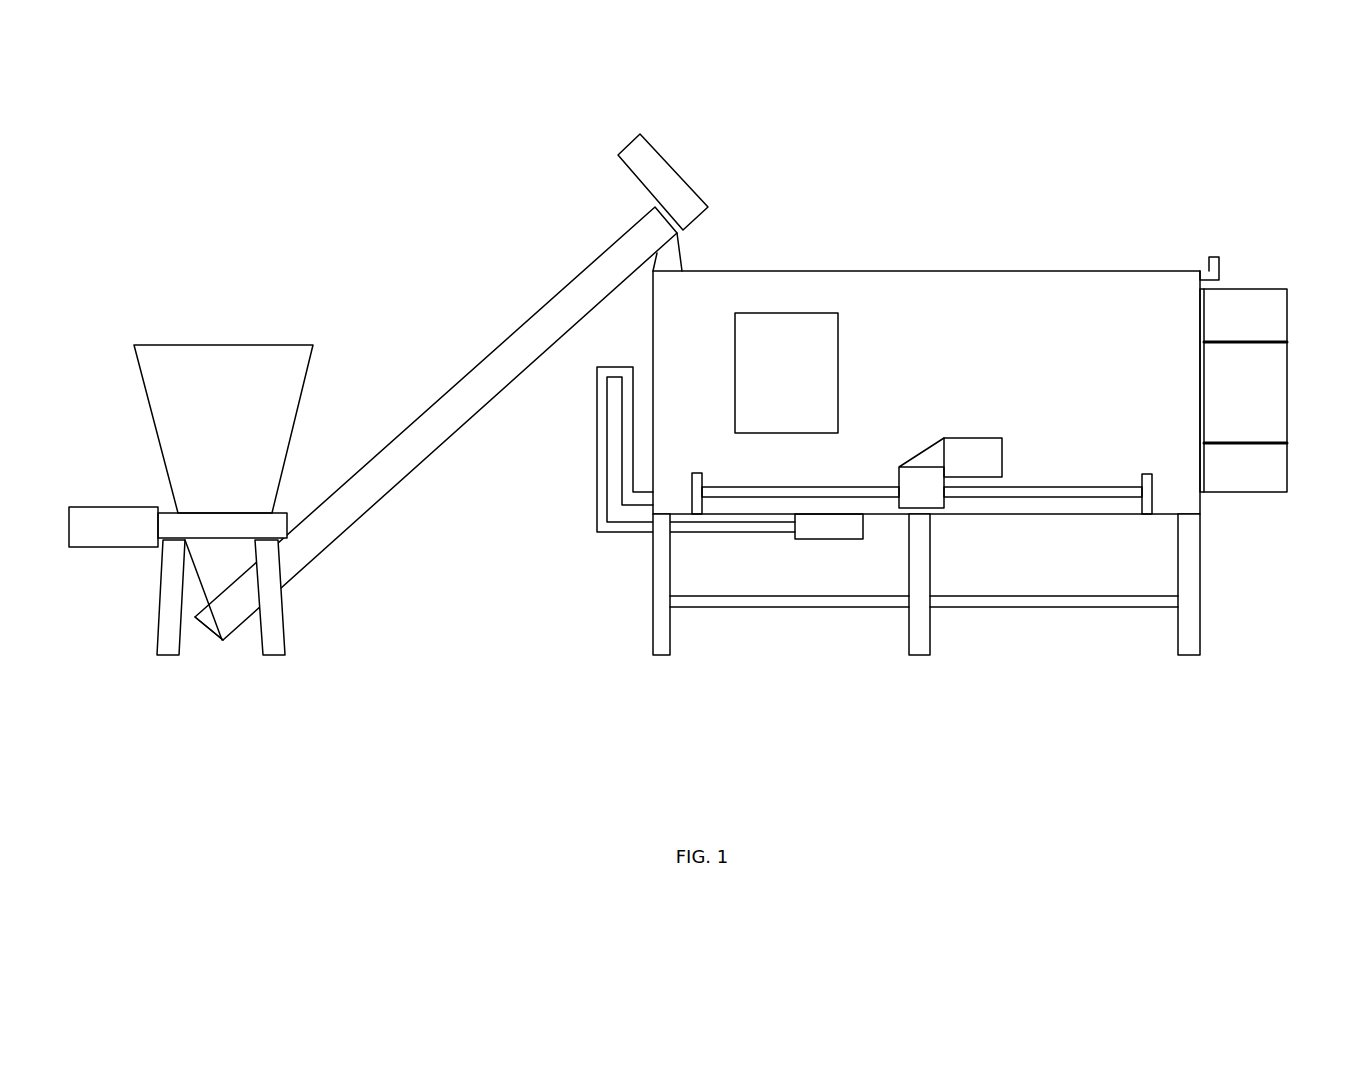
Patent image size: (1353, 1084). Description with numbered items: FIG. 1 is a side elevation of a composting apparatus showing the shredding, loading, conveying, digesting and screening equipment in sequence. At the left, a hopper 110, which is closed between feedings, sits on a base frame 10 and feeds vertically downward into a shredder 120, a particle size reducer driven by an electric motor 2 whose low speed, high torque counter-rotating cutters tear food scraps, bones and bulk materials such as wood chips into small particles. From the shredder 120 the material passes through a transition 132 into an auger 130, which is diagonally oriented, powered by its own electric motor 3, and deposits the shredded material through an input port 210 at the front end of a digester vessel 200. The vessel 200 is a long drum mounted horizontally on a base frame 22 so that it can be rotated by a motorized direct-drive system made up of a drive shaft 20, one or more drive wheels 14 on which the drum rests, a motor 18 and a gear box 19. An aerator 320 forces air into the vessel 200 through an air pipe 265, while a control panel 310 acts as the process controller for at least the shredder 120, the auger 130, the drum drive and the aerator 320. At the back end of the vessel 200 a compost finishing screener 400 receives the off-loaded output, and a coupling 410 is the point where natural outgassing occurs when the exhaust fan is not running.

The electric motor 2 is at (103, 530).
The electric motor 3 is at (668, 163).
The base frame 10 is at (270, 530).
The drive wheels 14 is at (695, 473).
The motor 18 is at (968, 448).
The gear box 19 is at (930, 493).
The drive shaft 20 is at (790, 487).
The base frame 22 is at (770, 604).
The hopper 110 is at (228, 345).
The shredder 120 is at (278, 486).
The auger 130 is at (447, 405).
The transition 132 is at (212, 573).
The vessel 200 is at (1075, 264).
The input port 210 is at (692, 248).
The air pipe 265 is at (606, 455).
The control panel 310 is at (786, 313).
The aerator 320 is at (836, 537).
The compost finishing screener 400 is at (1262, 394).
The coupling 410 is at (1217, 270).